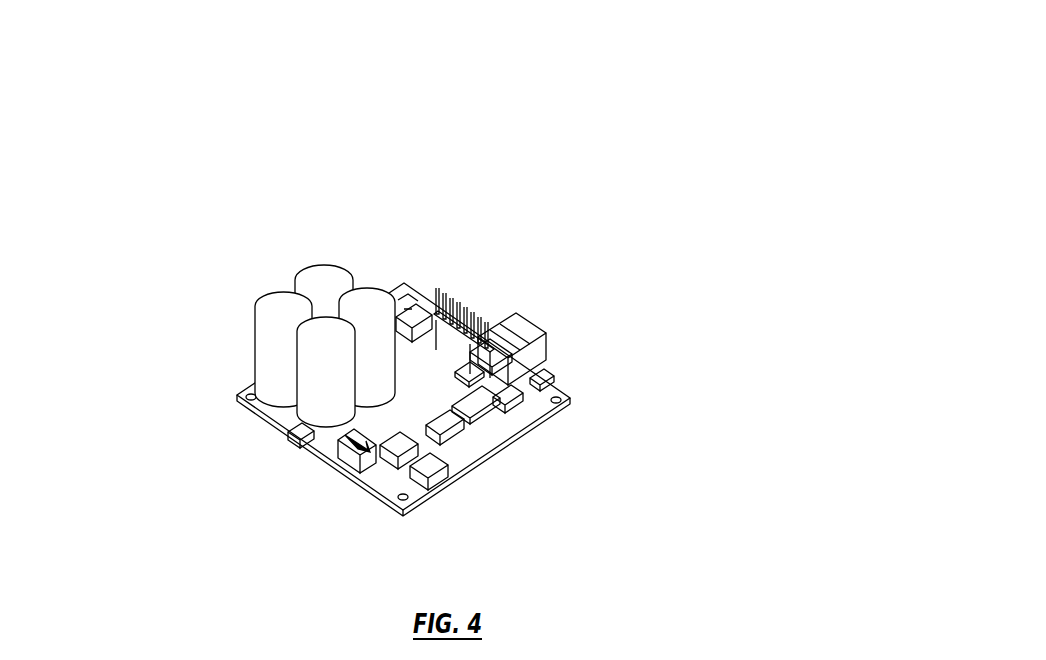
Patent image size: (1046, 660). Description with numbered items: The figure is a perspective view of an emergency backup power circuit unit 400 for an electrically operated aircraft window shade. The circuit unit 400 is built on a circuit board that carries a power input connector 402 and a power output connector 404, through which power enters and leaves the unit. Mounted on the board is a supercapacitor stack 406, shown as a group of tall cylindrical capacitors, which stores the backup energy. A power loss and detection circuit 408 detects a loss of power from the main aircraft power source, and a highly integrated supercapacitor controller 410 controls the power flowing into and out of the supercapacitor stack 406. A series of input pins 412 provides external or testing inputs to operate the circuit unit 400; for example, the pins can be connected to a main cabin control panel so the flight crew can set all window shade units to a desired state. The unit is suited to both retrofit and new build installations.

The emergency backup power circuit unit 400 is at (683, 37).
The power input connector 402 is at (522, 325).
The power output connector 404 is at (430, 475).
The supercapacitor stack 406 is at (222, 227).
The power loss and detection circuit 408 is at (400, 129).
The supercapacitor controller 410 is at (907, 369).
The input pins 412 is at (452, 282).